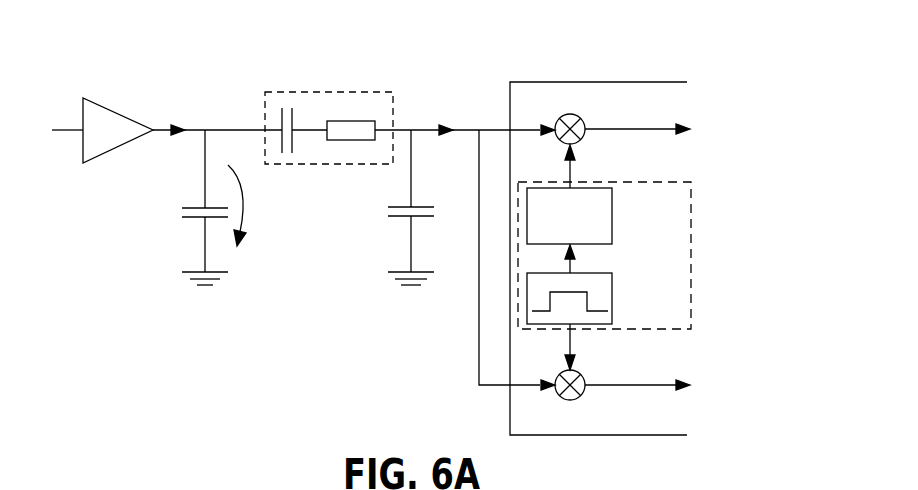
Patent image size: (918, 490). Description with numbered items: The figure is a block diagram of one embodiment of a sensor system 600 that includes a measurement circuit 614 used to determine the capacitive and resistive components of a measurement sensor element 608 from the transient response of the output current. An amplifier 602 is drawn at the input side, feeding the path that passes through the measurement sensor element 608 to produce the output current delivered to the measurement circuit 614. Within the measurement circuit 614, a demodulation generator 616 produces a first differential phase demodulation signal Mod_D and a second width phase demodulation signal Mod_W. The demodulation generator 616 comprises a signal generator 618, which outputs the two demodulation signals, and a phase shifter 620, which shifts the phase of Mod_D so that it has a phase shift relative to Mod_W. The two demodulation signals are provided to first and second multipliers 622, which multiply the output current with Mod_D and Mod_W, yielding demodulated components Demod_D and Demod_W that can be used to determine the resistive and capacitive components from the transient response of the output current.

The sensor system 600 is at (426, 220).
The amplifier 602 is at (110, 108).
The measurement sensor element 608 is at (372, 92).
The measurement circuit 614 is at (660, 82).
The demodulation generator 616 is at (638, 255).
The signal generator 618 is at (613, 299).
The phase shifter 620 is at (613, 218).
The multipliers 622 is at (578, 116).